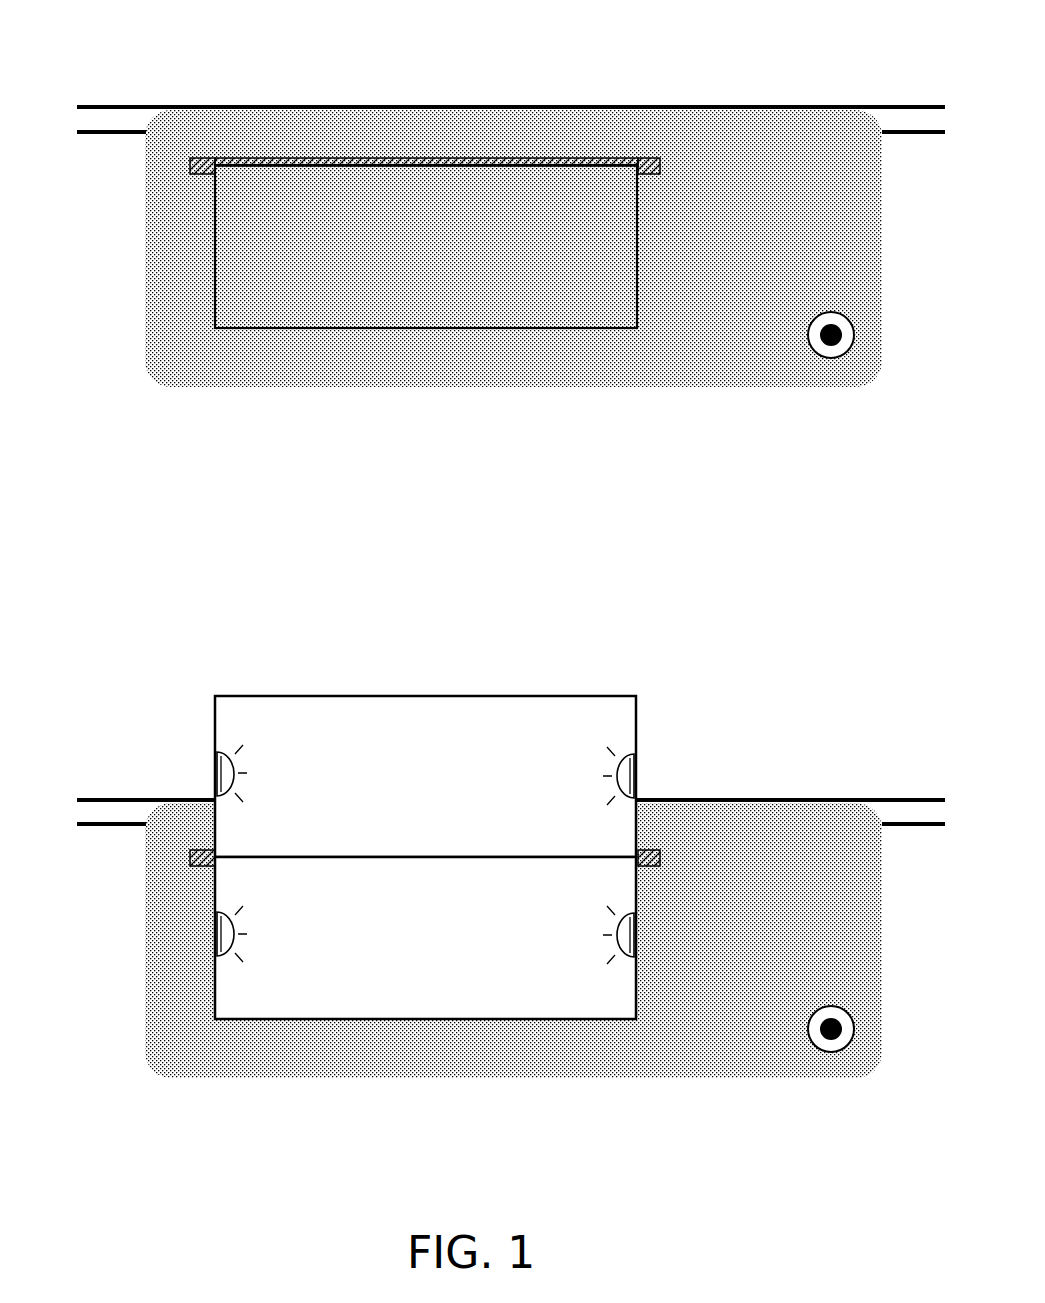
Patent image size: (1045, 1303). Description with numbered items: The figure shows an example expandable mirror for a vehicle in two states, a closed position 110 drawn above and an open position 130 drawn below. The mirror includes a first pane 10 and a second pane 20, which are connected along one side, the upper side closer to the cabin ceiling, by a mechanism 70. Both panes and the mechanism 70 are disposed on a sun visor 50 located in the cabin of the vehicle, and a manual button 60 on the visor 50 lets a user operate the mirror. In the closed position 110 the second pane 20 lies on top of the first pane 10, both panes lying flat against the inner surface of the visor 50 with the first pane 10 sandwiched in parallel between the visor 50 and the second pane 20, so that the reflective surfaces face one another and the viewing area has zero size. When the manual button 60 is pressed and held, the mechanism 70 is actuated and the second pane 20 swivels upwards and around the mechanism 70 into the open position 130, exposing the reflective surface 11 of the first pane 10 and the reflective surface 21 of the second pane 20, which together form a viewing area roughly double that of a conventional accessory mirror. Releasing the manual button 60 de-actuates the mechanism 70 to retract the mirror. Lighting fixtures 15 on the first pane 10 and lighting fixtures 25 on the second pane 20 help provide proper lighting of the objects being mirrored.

The closed position 110 is at (148, 37).
The open position 130 is at (148, 658).
The sun visor 50 is at (146, 359).
The manual button 60 is at (849, 363).
The mechanism 70 is at (666, 166).
The second pane 20 is at (641, 273).
The first pane 10 is at (588, 1024).
The reflective surface 21 is at (451, 788).
The reflective surface 11 is at (452, 945).
The lighting fixture 25 is at (262, 773).
The lighting fixture 15 is at (262, 933).